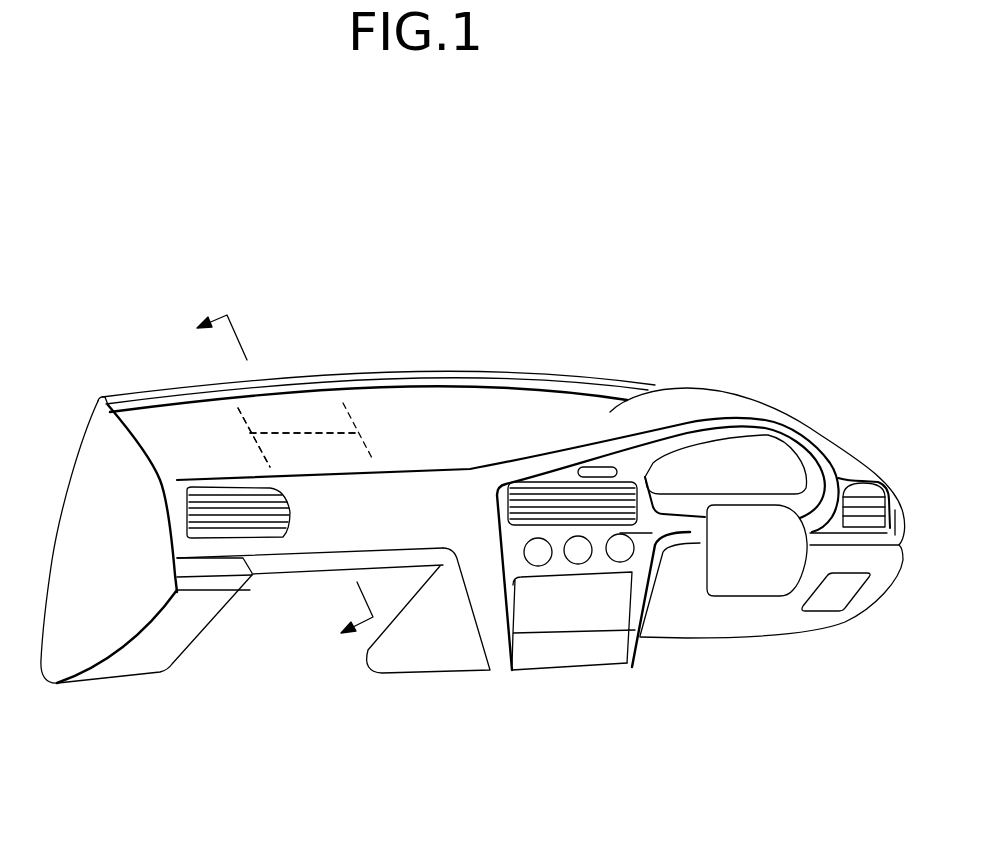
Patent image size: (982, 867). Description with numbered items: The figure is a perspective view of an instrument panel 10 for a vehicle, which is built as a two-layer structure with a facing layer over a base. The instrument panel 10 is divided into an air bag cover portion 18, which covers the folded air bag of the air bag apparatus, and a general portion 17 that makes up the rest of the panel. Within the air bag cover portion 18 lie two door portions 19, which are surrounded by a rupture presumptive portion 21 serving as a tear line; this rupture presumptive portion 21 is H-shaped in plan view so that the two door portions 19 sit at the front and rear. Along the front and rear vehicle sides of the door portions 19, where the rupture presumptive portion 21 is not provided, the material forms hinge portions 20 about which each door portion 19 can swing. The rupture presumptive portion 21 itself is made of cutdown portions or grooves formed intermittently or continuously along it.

The instrument panel 10 is at (533, 226).
The general portion 17 is at (567, 413).
The air bag cover portion 18 is at (370, 423).
The door portion 19 is at (325, 448).
The hinge portion 20 is at (277, 413).
The rupture presumptive portion 21 is at (245, 428).